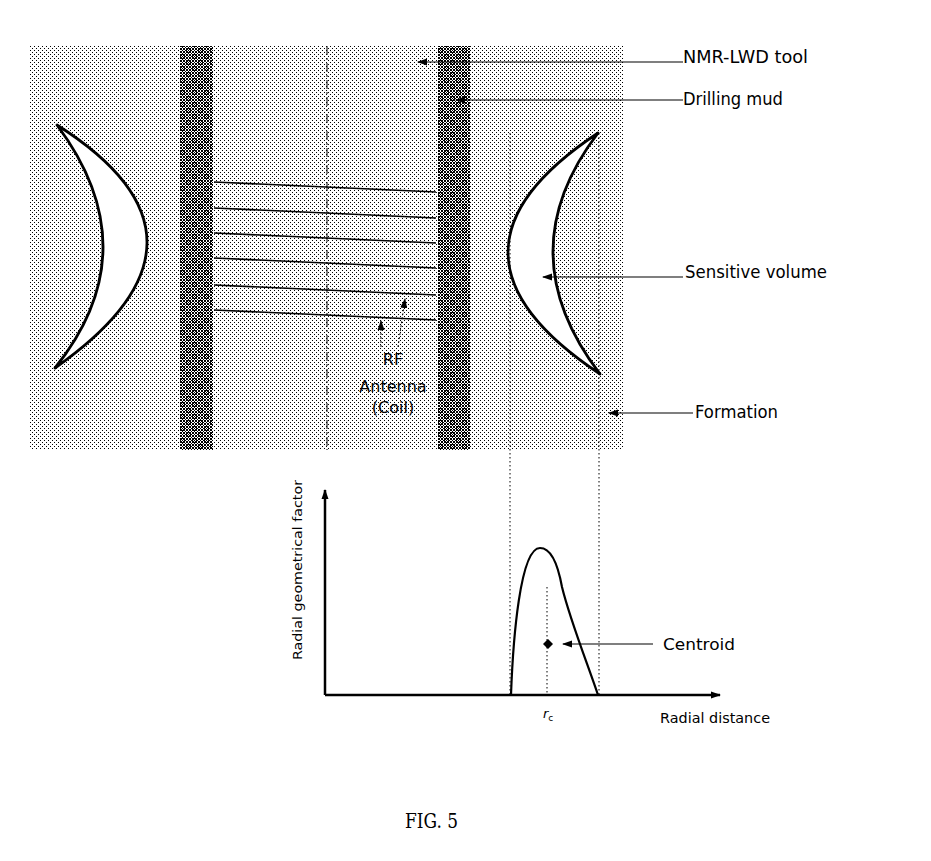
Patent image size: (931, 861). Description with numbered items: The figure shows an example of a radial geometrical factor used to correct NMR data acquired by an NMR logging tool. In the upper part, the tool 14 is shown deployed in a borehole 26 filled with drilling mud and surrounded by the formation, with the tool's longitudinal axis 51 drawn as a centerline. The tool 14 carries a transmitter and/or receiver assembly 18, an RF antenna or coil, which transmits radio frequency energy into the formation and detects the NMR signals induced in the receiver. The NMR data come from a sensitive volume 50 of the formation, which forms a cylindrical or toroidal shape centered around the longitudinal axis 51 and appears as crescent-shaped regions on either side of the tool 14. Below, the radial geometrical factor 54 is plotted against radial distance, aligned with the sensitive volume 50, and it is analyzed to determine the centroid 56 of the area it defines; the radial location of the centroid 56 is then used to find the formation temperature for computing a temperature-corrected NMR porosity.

The tool 14 is at (290, 70).
The transmitter and/or receiver assembly 18 is at (288, 182).
The borehole 26 is at (187, 45).
The sensitive volume 50 is at (110, 205).
The longitudinal axis 51 is at (329, 85).
The radial geometrical factor 54 is at (566, 602).
The centroid 56 is at (545, 641).